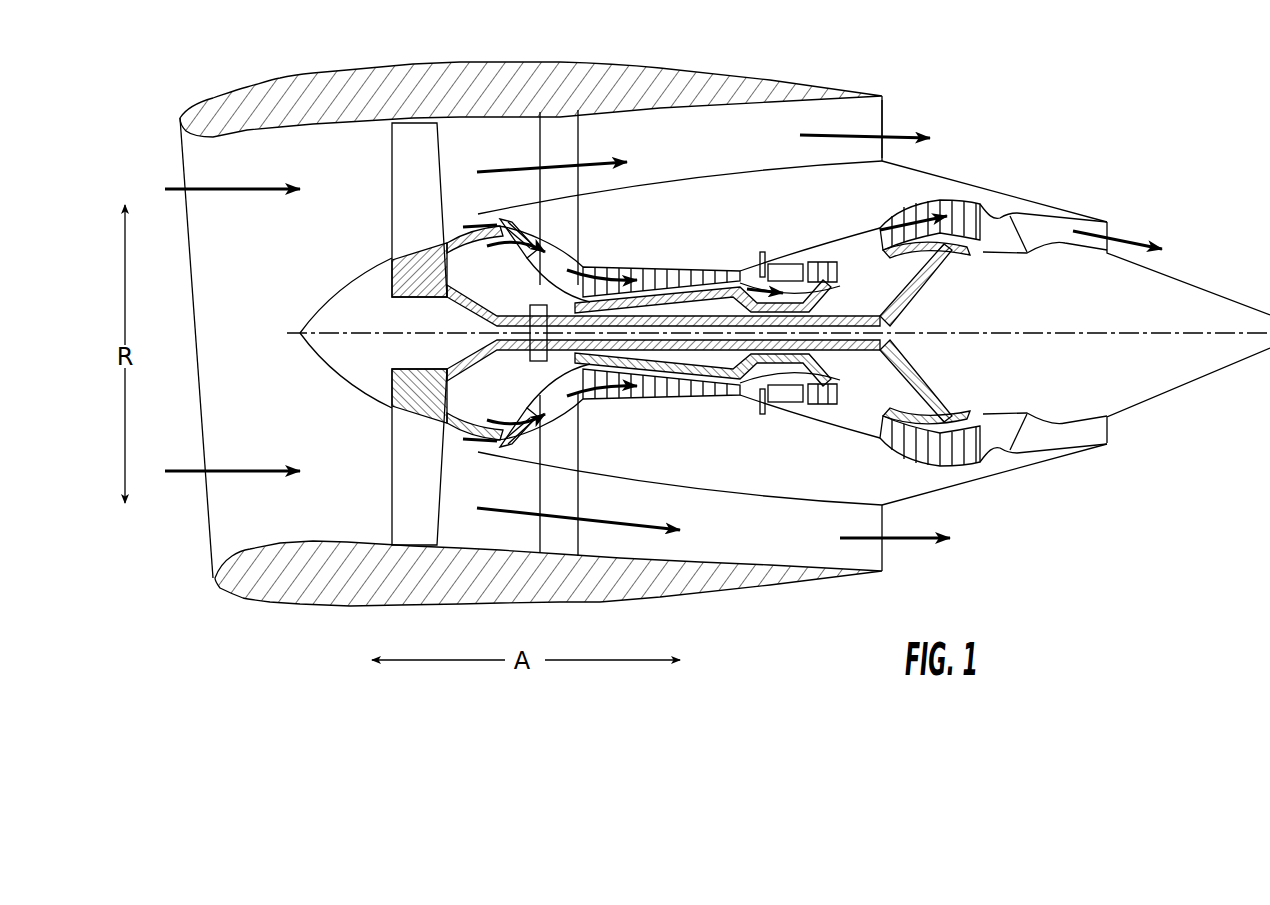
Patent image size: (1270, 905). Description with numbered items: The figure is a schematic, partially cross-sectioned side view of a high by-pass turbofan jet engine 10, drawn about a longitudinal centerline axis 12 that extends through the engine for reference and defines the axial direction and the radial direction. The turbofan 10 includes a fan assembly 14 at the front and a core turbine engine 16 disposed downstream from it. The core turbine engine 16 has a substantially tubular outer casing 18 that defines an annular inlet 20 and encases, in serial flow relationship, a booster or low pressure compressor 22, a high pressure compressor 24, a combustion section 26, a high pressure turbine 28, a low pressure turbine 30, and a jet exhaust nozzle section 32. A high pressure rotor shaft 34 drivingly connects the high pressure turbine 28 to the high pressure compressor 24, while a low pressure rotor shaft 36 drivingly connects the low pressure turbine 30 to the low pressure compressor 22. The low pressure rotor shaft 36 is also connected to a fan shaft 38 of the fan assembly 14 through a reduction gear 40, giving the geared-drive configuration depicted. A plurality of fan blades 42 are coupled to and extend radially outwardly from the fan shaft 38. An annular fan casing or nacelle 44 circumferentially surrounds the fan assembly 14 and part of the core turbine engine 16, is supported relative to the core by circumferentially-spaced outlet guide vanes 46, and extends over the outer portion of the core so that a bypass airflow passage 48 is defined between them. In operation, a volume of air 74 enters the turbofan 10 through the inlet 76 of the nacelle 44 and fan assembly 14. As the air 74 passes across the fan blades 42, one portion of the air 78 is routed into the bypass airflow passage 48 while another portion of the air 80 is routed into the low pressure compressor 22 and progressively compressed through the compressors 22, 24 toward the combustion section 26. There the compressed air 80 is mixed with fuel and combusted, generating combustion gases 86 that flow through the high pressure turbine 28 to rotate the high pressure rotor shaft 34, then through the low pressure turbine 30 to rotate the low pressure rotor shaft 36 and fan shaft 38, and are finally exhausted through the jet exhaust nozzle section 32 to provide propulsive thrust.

The turbofan jet engine 10 is at (1020, 80).
The longitudinal centerline axis 12 is at (1046, 332).
The fan assembly 14 is at (466, 138).
The core turbine engine 16 is at (773, 156).
The outer casing 18 is at (733, 500).
The annular inlet 20 is at (482, 448).
The low pressure compressor 22 is at (540, 398).
The high pressure compressor 24 is at (607, 403).
The combustion section 26 is at (780, 410).
The high pressure turbine 28 is at (846, 408).
The low pressure turbine 30 is at (963, 468).
The jet exhaust nozzle section 32 is at (1027, 440).
The high pressure rotor shaft 34 is at (823, 290).
The low pressure rotor shaft 36 is at (922, 287).
The fan shaft 38 is at (447, 299).
The reduction gear 40 is at (535, 300).
The fan blades 42 is at (407, 160).
The nacelle 44 is at (400, 60).
The outlet guide vanes 46 is at (567, 143).
The bypass airflow passage 48 is at (783, 130).
The air 74 is at (212, 188).
The inlet 76 is at (238, 518).
The bypass air 78 is at (530, 160).
The core air 80 is at (478, 212).
The combustion gases 86 is at (913, 210).